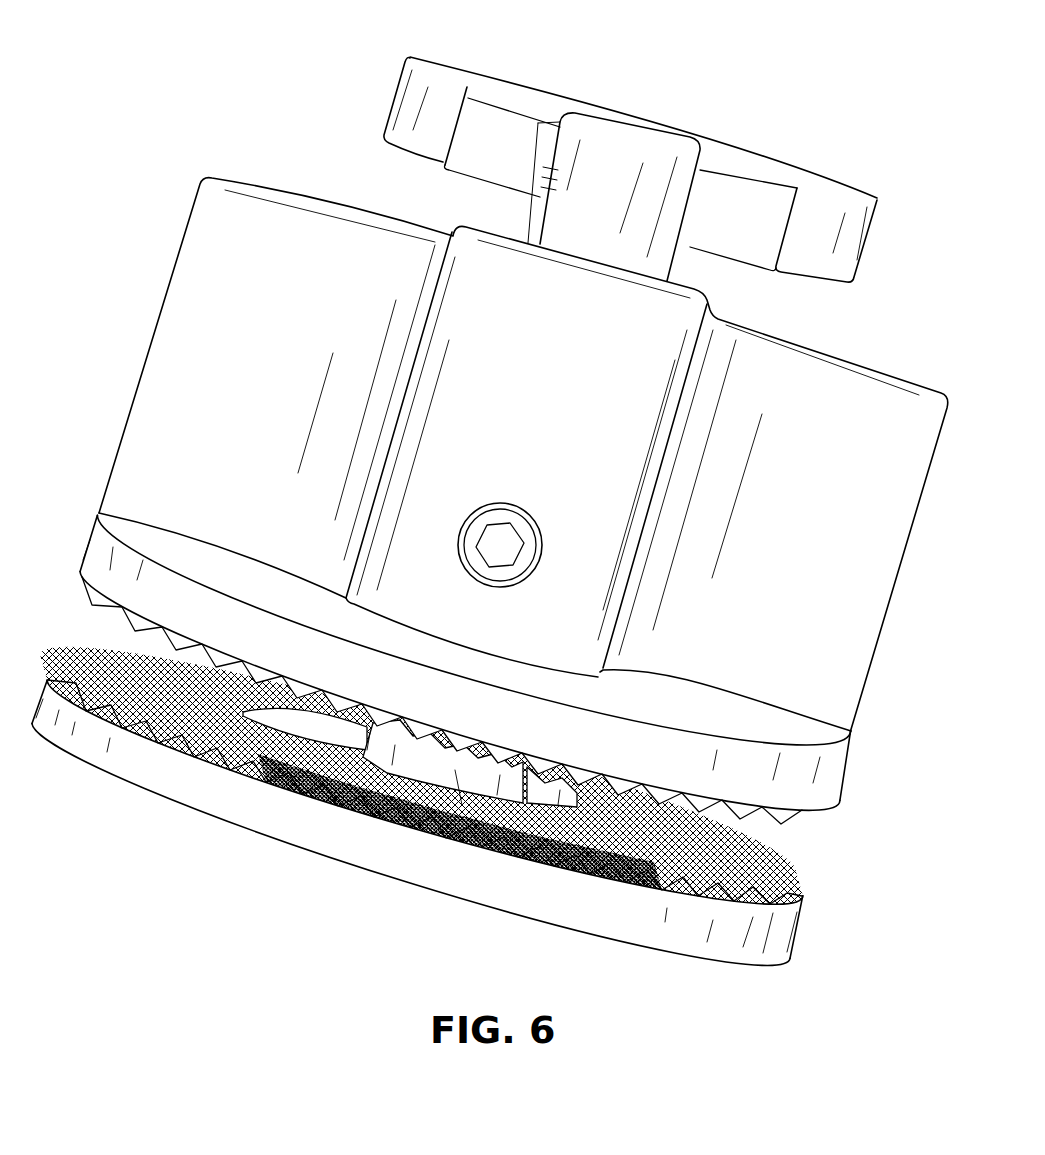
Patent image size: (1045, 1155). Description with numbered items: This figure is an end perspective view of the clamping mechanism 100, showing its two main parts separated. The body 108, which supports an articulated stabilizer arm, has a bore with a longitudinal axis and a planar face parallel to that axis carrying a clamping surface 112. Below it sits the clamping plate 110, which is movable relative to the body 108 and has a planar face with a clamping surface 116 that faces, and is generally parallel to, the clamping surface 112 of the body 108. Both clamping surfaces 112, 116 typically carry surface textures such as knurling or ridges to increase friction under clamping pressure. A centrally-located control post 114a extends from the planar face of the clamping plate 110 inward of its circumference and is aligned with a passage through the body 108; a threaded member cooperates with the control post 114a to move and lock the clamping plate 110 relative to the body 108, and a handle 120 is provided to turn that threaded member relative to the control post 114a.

The clamping mechanism 100 is at (840, 98).
The body 108 is at (495, 297).
The clamping plate 110 is at (278, 812).
The clamping surface 112 is at (662, 883).
The control post 114a is at (450, 827).
The clamping surface 116 is at (383, 824).
The handle 120 is at (738, 217).